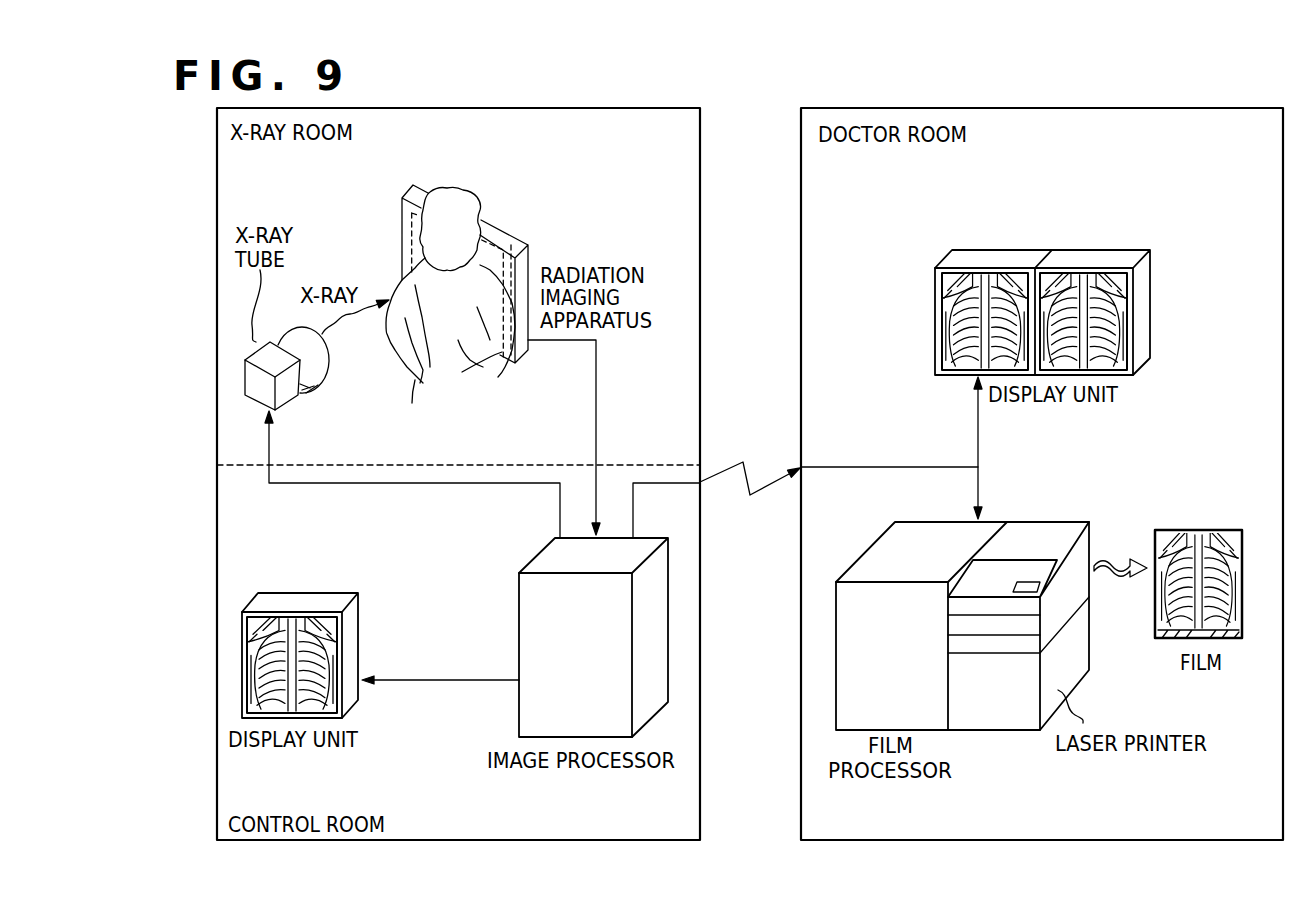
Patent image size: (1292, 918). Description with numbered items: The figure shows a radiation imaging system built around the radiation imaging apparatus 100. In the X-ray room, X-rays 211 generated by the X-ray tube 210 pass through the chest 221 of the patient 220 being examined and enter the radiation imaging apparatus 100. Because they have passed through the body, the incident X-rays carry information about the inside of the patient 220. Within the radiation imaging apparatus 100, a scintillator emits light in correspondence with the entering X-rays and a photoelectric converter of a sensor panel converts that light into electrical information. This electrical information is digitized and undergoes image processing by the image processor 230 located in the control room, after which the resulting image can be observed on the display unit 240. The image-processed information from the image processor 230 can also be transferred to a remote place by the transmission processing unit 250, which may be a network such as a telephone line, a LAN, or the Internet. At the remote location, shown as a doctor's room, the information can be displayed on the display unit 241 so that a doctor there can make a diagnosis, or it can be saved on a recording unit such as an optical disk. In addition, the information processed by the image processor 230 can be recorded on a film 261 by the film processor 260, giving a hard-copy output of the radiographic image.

The radiation imaging apparatus 100 is at (521, 238).
The X-ray tube 210 is at (248, 380).
The X-rays 211 is at (345, 325).
The patient 220 is at (465, 205).
The chest 221 is at (463, 377).
The image processor 230 is at (519, 717).
The display unit 240 is at (278, 598).
The display unit 241 is at (967, 248).
The transmission processing unit 250 is at (735, 460).
The film processor 260 is at (835, 657).
The film 261 is at (1172, 530).